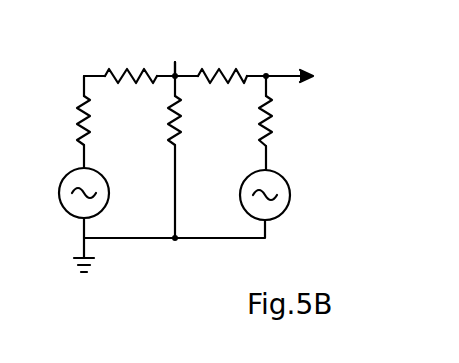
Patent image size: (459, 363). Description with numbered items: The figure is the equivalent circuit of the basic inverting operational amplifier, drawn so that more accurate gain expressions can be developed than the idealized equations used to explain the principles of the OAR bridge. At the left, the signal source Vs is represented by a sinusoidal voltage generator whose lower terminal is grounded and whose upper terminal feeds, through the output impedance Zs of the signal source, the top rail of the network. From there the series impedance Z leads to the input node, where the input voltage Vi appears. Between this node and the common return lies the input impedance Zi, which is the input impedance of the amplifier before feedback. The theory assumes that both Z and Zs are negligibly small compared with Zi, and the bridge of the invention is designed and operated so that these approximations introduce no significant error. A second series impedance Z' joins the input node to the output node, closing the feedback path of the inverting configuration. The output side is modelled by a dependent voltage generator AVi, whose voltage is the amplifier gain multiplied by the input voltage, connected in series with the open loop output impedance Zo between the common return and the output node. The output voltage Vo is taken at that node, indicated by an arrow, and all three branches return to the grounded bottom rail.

The input impedance element Z is at (130, 64).
The feedback impedance element Z' is at (221, 61).
The output impedance of the signal source Zs is at (95, 120).
The input impedance Zi is at (185, 120).
The open loop output impedance Zo is at (279, 121).
The signal source Vs is at (87, 183).
The dependent voltage generator AVi is at (276, 184).
The input voltage node Vi is at (166, 62).
The output voltage Vo is at (284, 66).